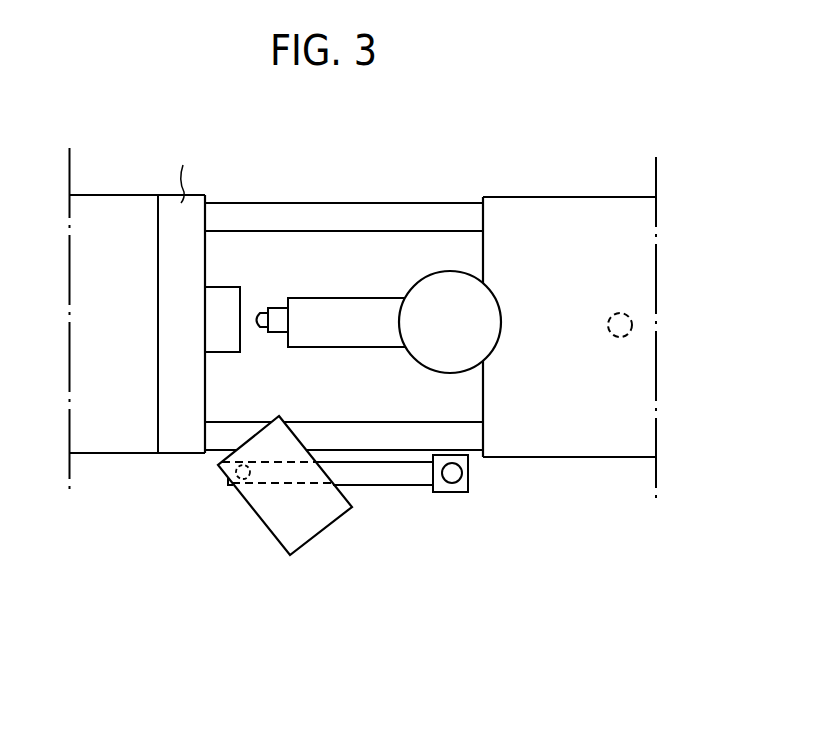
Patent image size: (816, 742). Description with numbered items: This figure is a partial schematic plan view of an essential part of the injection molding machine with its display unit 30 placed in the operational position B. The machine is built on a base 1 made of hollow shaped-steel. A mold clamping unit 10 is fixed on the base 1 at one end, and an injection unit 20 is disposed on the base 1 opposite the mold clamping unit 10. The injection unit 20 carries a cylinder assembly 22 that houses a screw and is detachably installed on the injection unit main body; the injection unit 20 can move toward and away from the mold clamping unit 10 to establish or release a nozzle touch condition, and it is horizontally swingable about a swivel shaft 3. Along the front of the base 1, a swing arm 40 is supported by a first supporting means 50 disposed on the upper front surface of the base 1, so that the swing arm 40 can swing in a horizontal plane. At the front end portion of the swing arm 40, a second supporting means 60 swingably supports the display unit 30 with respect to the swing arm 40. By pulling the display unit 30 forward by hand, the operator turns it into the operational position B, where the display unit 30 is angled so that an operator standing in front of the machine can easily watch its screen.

The base 1 is at (318, 215).
The mold clamping unit 10 is at (122, 210).
The injection unit 20 is at (532, 212).
The cylinder assembly 22 is at (320, 317).
The swivel shaft 3 is at (629, 318).
The display unit 30 is at (305, 527).
The swing arm 40 is at (383, 475).
The first supporting means 50 is at (460, 493).
The second supporting means 60 is at (238, 490).
The operational position B is at (290, 396).